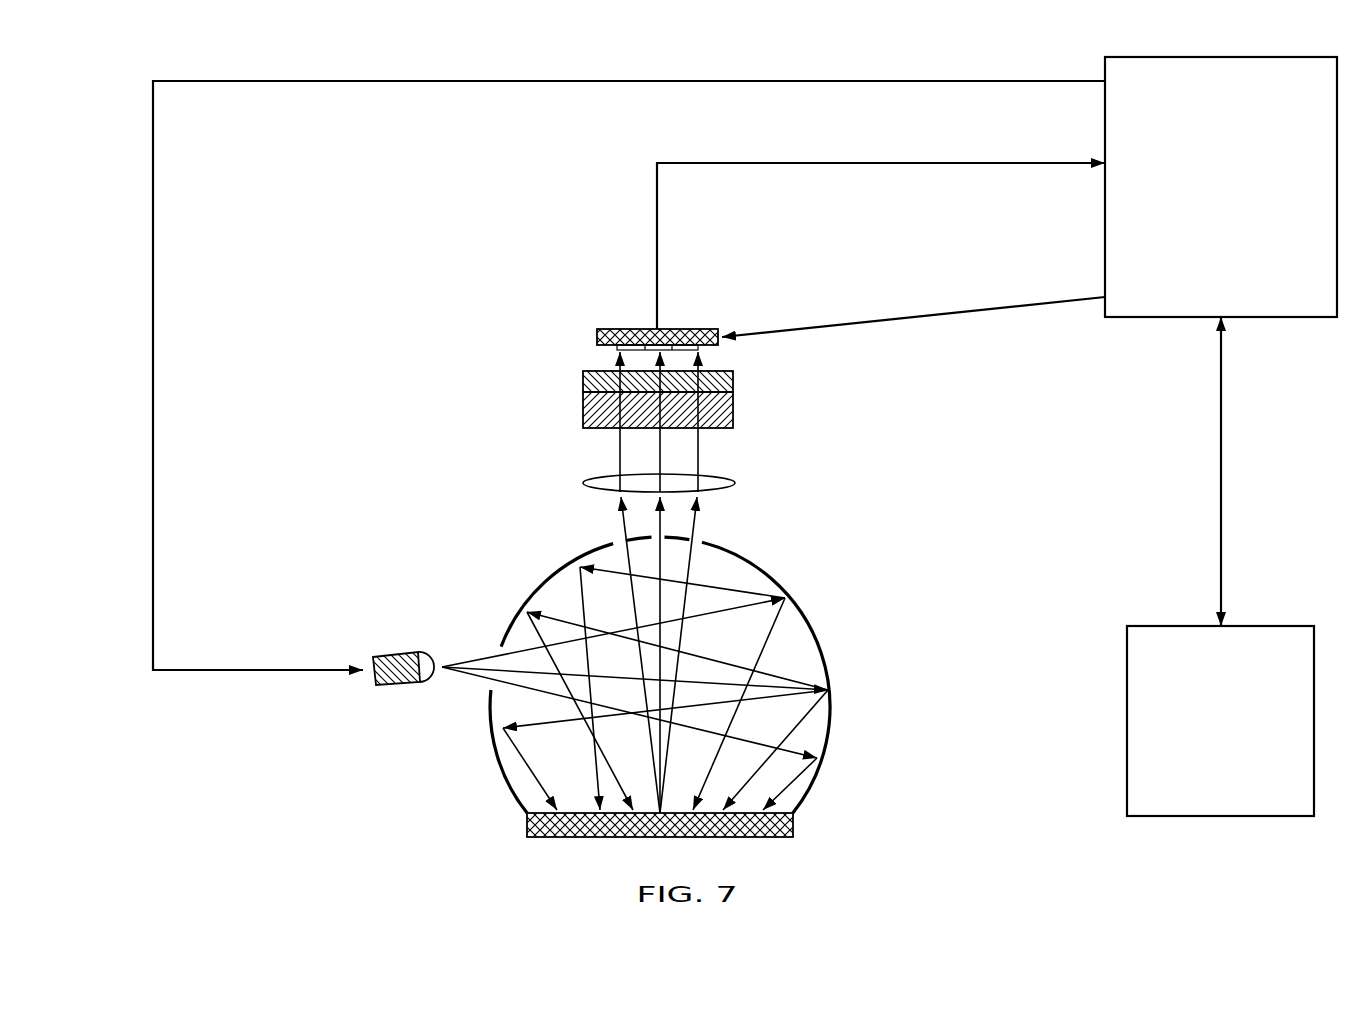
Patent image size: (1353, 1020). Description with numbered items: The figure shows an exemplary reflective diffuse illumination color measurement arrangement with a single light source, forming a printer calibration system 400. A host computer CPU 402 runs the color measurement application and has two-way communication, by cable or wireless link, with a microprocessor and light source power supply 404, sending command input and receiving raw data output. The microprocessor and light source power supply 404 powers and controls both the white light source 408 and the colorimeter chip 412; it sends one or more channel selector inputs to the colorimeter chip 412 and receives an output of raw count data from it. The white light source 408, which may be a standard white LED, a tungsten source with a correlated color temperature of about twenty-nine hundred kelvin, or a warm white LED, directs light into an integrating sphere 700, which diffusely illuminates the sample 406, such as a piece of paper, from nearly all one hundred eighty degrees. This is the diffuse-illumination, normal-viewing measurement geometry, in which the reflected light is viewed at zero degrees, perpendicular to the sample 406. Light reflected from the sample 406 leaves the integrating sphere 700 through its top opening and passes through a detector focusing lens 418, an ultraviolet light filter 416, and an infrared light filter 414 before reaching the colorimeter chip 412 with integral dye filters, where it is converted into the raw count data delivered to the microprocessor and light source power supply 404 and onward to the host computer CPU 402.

The printer calibration system 400 is at (114, 55).
The host computer CPU 402 is at (1202, 678).
The microprocessor and light source power supply 404 is at (1201, 136).
The sample 406 is at (797, 825).
The white light source 408 is at (367, 700).
The colorimeter chip 412 is at (597, 330).
The infrared light filter 414 is at (582, 377).
The ultraviolet light filter 416 is at (736, 403).
The detector focusing lens 418 is at (580, 486).
The integrating sphere 700 is at (815, 620).